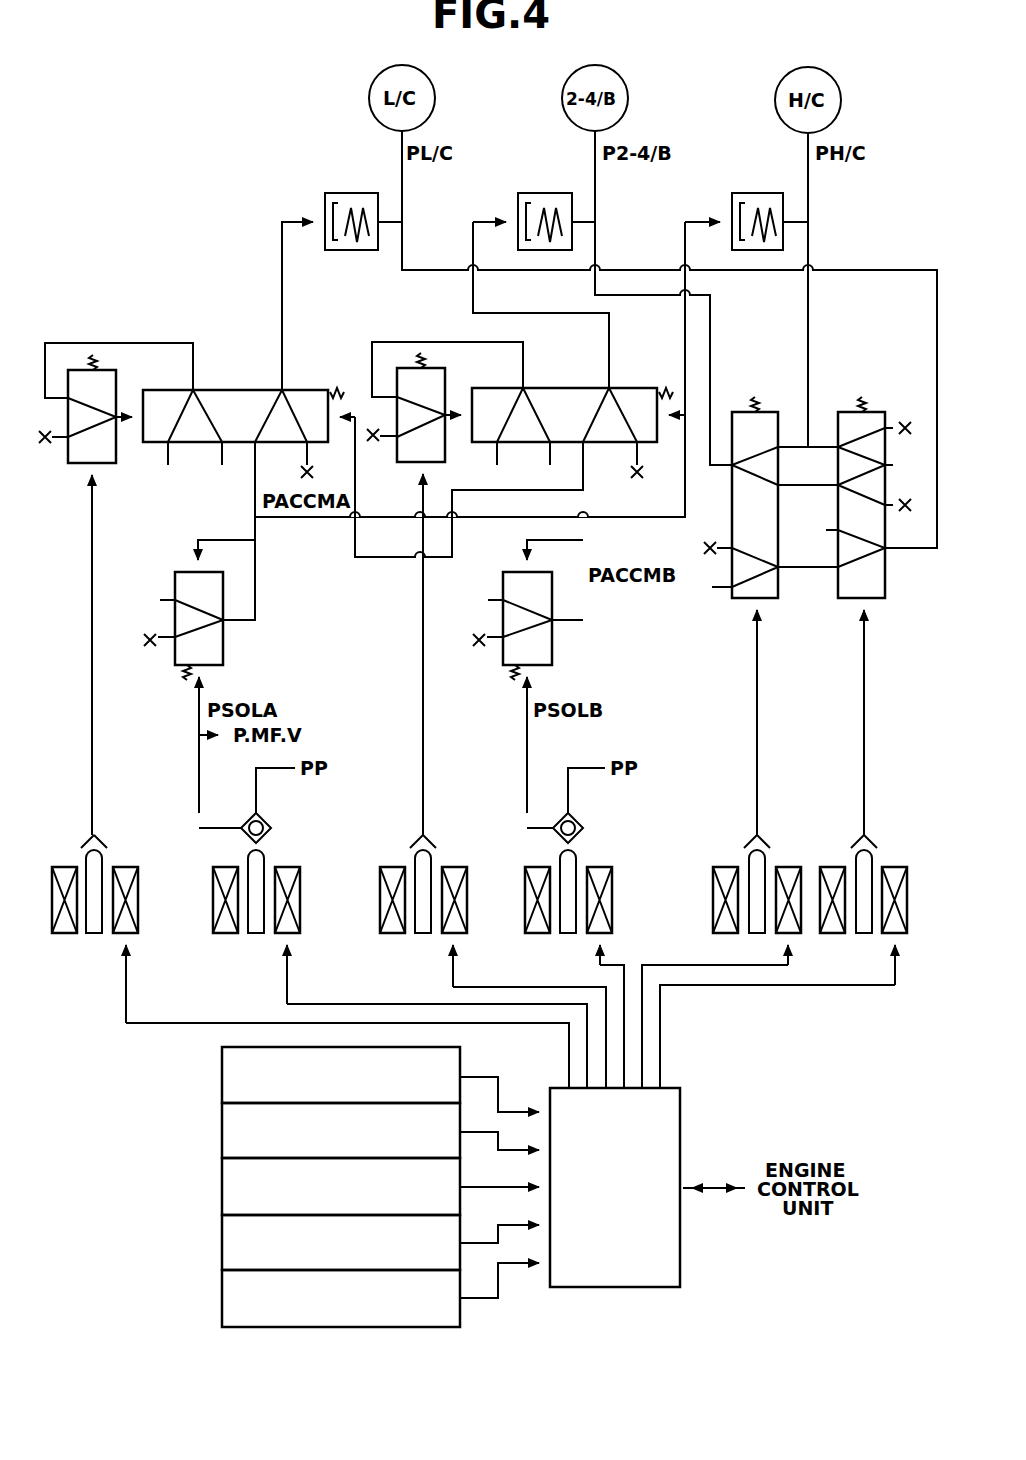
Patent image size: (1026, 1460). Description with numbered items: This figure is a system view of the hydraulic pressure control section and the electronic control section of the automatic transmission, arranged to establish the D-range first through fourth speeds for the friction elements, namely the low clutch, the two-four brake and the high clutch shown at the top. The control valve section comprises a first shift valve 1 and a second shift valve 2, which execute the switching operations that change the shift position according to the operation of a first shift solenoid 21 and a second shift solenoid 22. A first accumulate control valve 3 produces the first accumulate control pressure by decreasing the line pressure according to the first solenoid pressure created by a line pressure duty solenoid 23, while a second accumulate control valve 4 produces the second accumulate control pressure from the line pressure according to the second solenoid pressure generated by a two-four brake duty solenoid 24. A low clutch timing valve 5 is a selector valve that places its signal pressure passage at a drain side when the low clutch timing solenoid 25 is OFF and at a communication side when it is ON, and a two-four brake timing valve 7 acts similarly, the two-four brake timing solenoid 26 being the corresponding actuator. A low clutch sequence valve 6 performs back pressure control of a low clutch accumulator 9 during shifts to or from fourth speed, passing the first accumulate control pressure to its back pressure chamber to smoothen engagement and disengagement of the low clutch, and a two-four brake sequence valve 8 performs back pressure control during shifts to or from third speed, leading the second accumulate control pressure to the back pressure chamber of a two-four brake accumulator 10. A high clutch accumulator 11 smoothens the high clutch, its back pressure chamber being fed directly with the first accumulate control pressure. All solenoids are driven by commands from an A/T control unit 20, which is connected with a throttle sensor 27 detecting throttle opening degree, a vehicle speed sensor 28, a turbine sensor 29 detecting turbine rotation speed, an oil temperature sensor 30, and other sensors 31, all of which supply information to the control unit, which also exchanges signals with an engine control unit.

The first shift valve 1 is at (775, 402).
The second shift valve 2 is at (882, 402).
The first accumulate control valve 3 is at (234, 643).
The second accumulate control valve 4 is at (563, 643).
The low clutch timing valve 5 is at (116, 390).
The low clutch sequence valve 6 is at (304, 378).
The 2-4 brake timing valve 7 is at (445, 388).
The 2-4 brake sequence valve 8 is at (632, 376).
The low clutch accumulator 9 is at (348, 193).
The 2-4 brake accumulator 10 is at (540, 193).
The high clutch accumulator 11 is at (755, 193).
The A/T control unit 20 is at (692, 1124).
The first shift solenoid 21 is at (788, 850).
The second shift solenoid 22 is at (894, 850).
The line pressure duty solenoid 23 is at (286, 850).
The 2-4/B duty solenoid 24 is at (598, 850).
The low clutch timing solenoid 25 is at (124, 850).
The 2-4/B timing solenoid 26 is at (452, 850).
The throttle sensor 27 is at (222, 1077).
The vehicle speed sensor 28 is at (222, 1132).
The turbine sensor 29 is at (222, 1189).
The oil temperature sensor 30 is at (222, 1244).
The other sensors 31 is at (222, 1299).